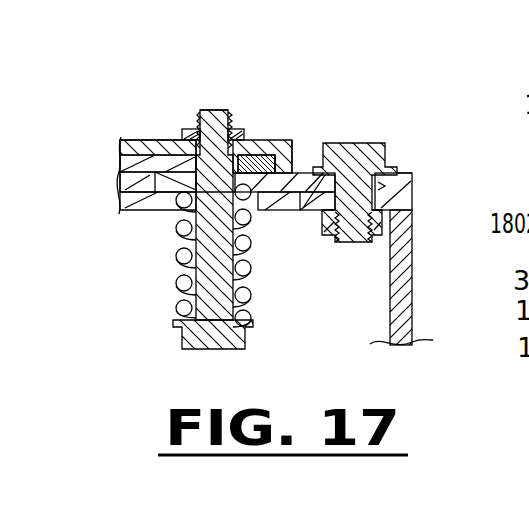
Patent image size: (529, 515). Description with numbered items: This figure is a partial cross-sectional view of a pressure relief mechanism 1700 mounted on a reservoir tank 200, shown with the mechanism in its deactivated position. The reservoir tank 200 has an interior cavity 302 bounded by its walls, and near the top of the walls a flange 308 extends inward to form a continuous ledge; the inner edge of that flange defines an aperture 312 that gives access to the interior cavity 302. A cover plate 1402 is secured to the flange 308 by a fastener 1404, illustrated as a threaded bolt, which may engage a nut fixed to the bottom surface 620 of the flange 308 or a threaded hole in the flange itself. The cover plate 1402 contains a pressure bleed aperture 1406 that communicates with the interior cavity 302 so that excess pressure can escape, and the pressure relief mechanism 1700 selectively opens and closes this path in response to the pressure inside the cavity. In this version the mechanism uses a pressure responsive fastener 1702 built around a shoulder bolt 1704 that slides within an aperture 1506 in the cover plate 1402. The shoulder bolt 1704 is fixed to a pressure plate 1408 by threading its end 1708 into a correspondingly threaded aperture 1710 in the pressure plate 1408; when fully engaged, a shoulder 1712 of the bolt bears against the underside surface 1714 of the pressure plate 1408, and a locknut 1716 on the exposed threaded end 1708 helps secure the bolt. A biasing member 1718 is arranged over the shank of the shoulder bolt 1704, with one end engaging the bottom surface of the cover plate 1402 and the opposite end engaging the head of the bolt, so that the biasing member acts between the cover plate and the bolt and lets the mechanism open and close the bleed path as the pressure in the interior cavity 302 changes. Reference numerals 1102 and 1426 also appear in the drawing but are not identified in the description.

The pressure relief mechanism 1700 is at (188, 76).
The pressure responsive fastener 1702 is at (187, 352).
The shoulder bolt 1704 is at (247, 344).
The threaded end 1708 is at (202, 110).
The threaded aperture 1710 is at (190, 129).
The shoulder 1712 is at (170, 133).
The underside surface 1714 is at (120, 161).
The locknut 1716 is at (236, 129).
The biasing member 1718 is at (176, 289).
The pressure plate 1408 is at (265, 155).
The cover plate 1402 is at (305, 172).
The fastener 1404 is at (369, 143).
The pressure bleed aperture 1406 is at (417, 212).
The bracket flange 1102 is at (419, 175).
The lower plate 1426 is at (196, 194).
The aperture 1506 is at (176, 211).
The aperture 312 is at (165, 200).
The flange 308 is at (288, 218).
The bottom surface 620 is at (277, 212).
The interior cavity 302 is at (330, 338).
The reservoir tank 200 is at (412, 263).